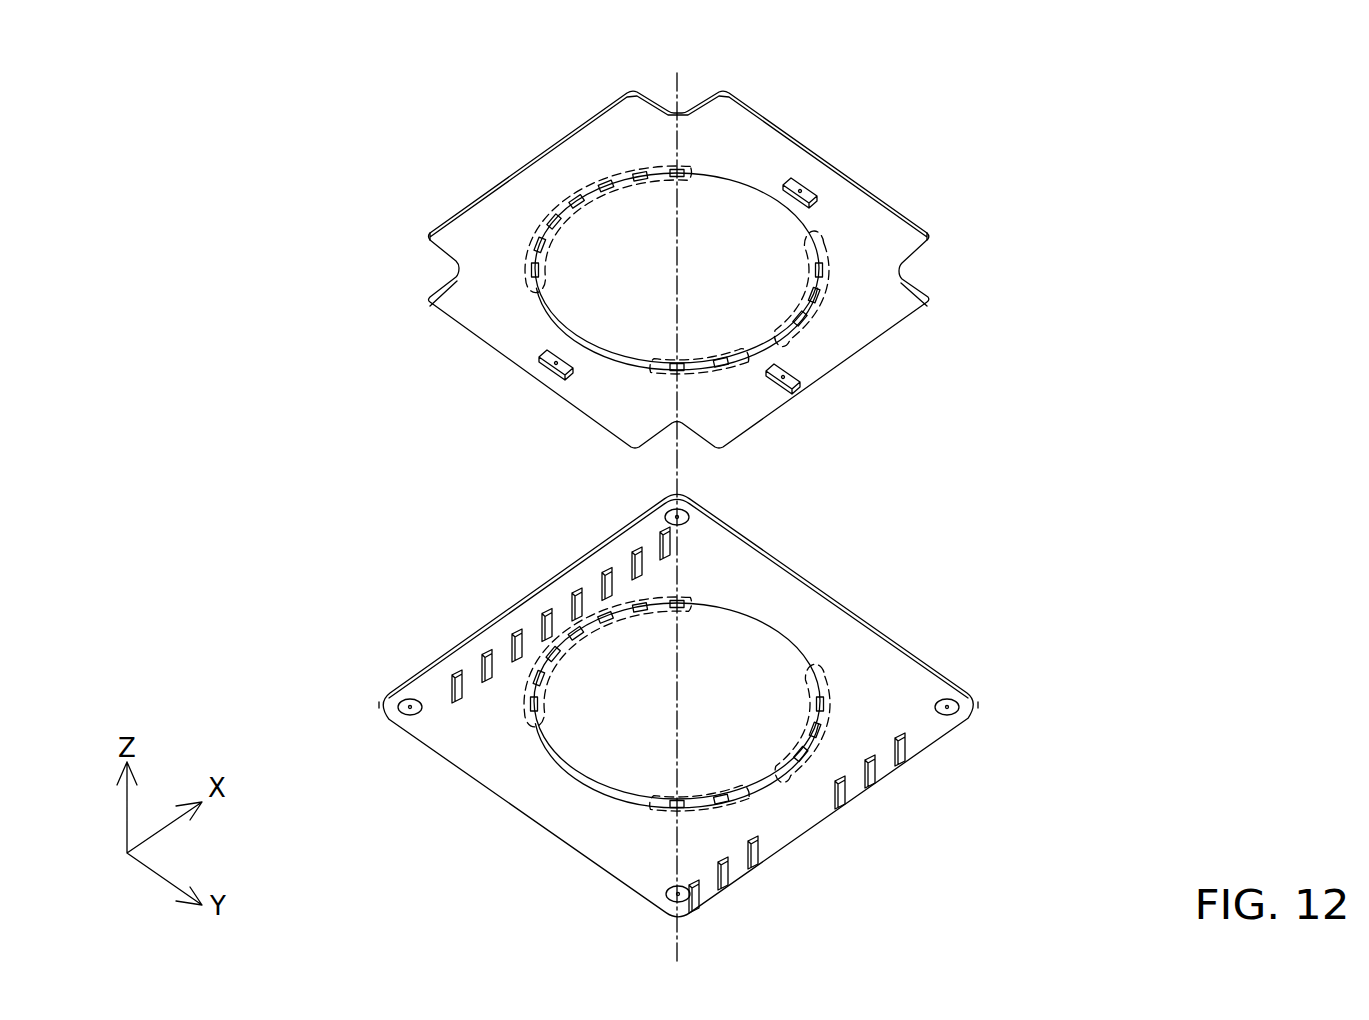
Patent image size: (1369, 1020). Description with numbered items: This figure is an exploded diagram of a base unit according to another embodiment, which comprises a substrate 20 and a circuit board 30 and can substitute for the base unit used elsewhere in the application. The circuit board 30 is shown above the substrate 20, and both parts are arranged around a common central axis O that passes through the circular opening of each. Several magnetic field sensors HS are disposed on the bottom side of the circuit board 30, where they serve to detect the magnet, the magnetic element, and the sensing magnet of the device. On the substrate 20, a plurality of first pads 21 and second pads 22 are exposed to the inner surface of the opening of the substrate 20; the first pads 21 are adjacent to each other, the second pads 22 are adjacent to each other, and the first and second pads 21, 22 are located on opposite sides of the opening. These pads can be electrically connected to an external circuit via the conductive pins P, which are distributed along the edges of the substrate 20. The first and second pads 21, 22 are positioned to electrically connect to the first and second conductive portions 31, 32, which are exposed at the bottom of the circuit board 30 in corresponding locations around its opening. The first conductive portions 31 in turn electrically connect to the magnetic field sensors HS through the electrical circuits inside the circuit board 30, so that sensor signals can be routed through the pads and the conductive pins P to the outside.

The optical axis O is at (677, 503).
The substrate 20 is at (852, 583).
The first pads 21 is at (527, 710).
The second pads 22 is at (837, 700).
The circuit board 30 is at (802, 121).
The first conductive portions 31 is at (556, 192).
The second conductive portions 32 is at (825, 312).
The magnetic field sensors HS is at (822, 192).
The conductive pins P is at (547, 625).